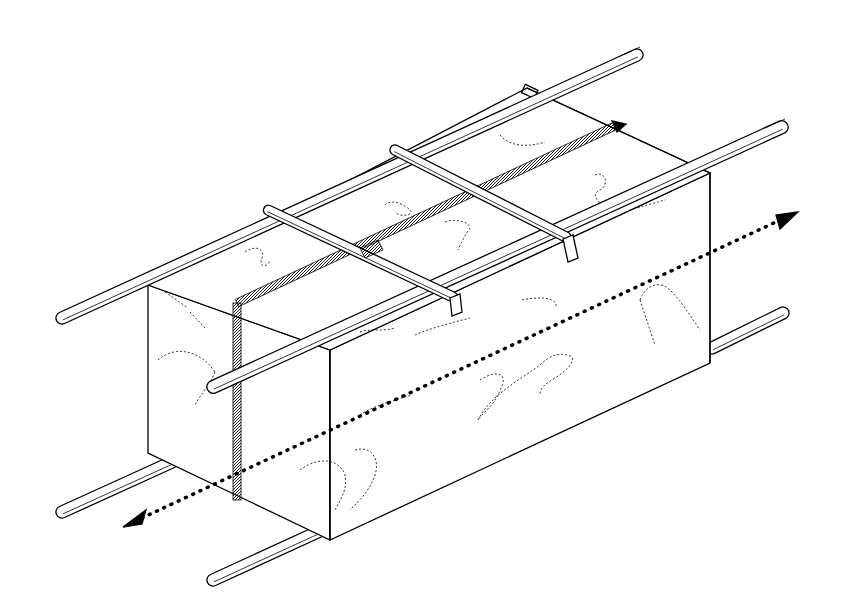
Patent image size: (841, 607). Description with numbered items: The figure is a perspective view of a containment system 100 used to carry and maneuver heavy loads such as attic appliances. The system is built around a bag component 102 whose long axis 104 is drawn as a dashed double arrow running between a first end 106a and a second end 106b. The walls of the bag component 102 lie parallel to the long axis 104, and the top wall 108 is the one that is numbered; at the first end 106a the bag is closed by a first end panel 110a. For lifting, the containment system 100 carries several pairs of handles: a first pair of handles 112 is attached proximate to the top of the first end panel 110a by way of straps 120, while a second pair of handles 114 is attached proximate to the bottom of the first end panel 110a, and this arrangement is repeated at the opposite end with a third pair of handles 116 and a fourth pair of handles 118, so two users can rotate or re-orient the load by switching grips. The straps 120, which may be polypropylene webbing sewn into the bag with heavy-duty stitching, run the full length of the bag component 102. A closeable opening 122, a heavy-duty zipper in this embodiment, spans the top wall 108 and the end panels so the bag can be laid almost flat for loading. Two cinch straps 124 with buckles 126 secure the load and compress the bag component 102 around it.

The containment system 100 is at (347, 92).
The bag component 102 is at (541, 428).
The long axis 104 is at (765, 226).
The first end 106a is at (345, 553).
The second end 106b is at (707, 376).
The top wall 108 is at (593, 128).
The first end panel 110a is at (239, 412).
The first pair of handles 112 is at (412, 257).
The second pair of handles 114 is at (184, 531).
The third pair of handles 116 is at (702, 84).
The fourth pair of handles 118 is at (760, 310).
The strap 120 is at (150, 273).
The closeable opening 122 is at (332, 258).
The cinch strap 124 is at (283, 210).
The buckle 126 is at (370, 247).